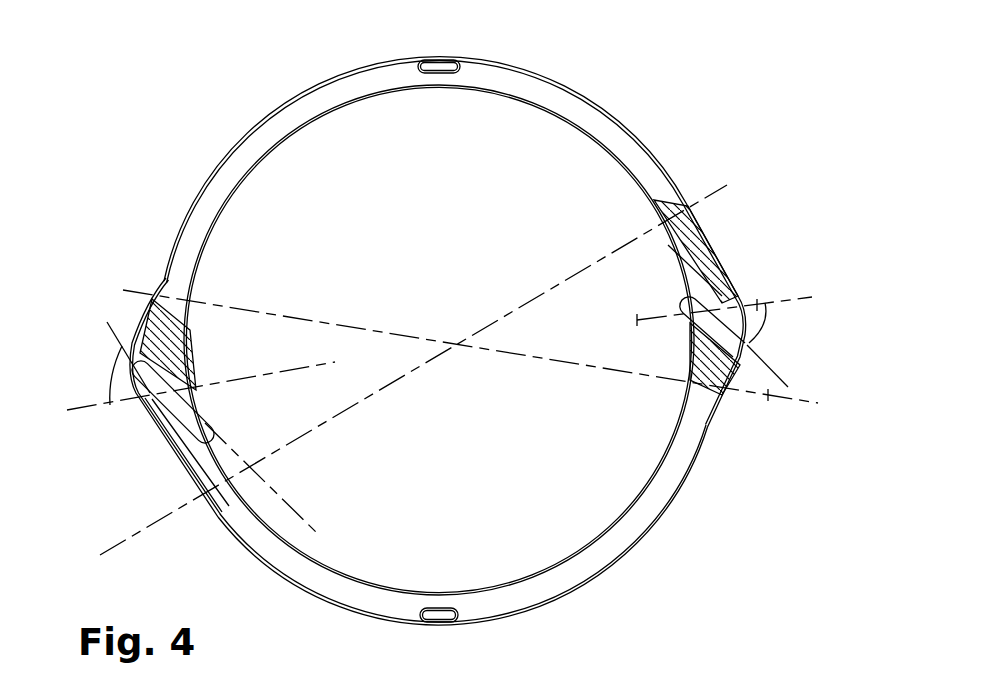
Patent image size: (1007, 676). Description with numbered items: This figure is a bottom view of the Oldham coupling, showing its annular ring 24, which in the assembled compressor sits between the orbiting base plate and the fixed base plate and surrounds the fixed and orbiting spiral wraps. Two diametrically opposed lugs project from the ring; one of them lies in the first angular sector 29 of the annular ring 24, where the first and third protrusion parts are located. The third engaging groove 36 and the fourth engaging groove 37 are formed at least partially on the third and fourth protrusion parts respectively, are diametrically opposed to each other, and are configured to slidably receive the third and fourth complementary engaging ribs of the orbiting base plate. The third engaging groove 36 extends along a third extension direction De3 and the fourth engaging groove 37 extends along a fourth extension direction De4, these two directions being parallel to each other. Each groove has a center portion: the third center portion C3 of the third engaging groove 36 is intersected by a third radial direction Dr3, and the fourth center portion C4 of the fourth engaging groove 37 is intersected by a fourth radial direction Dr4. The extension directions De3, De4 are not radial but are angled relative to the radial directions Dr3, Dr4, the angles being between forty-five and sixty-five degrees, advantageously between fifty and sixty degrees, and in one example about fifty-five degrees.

The annular ring 24 is at (610, 134).
The third engaging groove 36 is at (681, 277).
The fourth engaging groove 37 is at (213, 405).
The first angular sector 29 is at (768, 395).
The third extension direction De3 is at (664, 228).
The fourth extension direction De4 is at (127, 345).
The third radial direction Dr3 is at (637, 320).
The fourth radial direction Dr4 is at (267, 370).
The third center portion C3 is at (718, 283).
The fourth center portion C4 is at (168, 408).